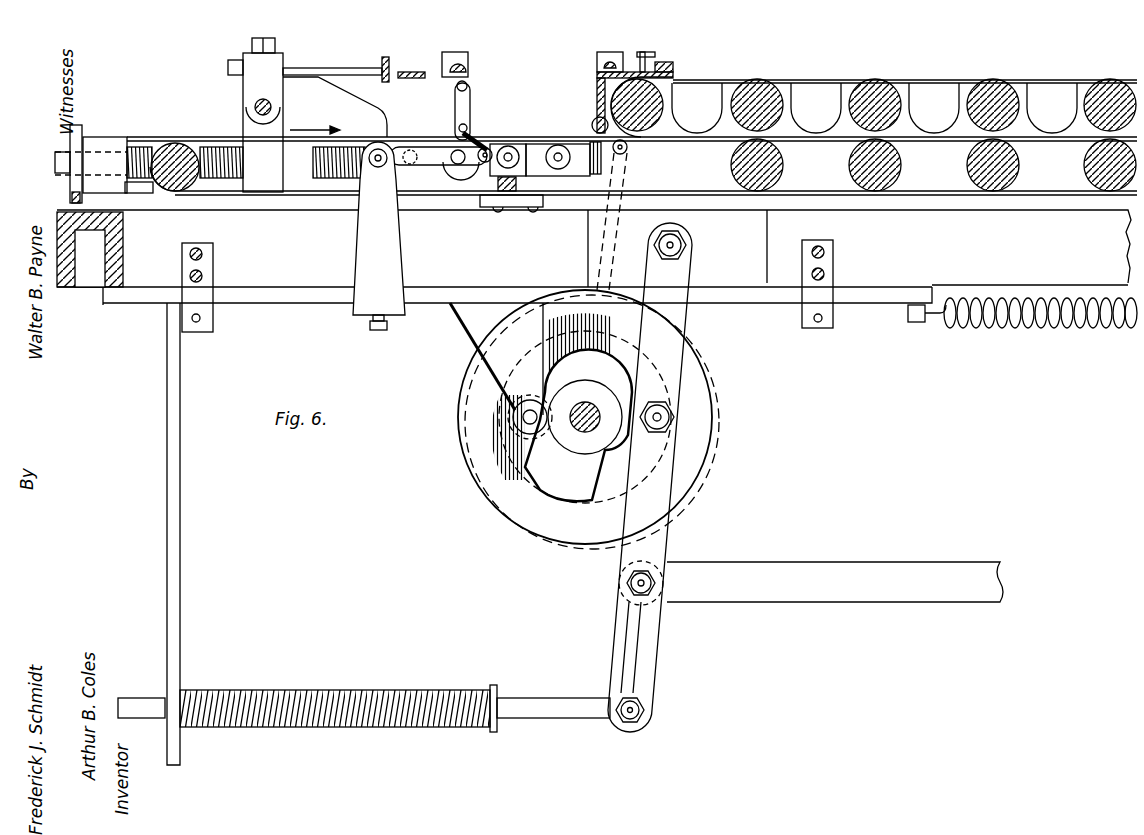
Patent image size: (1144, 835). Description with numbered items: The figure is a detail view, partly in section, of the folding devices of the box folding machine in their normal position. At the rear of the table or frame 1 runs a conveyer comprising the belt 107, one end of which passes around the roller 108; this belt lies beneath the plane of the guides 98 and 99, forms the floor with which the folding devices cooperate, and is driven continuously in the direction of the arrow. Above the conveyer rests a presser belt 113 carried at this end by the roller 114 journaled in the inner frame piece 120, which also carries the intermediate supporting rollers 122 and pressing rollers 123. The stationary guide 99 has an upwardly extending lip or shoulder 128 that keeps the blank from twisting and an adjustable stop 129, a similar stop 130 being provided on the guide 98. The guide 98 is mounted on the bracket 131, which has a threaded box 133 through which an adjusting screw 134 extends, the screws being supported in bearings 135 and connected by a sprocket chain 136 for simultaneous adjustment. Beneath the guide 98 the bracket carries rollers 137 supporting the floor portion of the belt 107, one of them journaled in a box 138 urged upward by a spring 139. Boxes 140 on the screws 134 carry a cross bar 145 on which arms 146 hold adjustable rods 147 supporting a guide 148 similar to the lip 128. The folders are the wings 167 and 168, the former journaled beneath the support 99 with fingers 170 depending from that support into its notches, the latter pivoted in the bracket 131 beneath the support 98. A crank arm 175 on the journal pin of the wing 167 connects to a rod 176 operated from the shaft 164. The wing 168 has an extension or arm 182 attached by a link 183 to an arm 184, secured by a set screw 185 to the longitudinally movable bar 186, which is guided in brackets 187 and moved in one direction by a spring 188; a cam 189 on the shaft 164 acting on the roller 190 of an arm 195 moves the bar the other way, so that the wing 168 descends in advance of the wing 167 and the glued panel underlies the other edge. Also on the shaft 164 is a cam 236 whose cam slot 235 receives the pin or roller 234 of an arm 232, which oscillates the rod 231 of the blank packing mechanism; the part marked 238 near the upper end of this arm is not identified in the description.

The table or frame 1 is at (594, 487).
The guide 98 is at (412, 70).
The guide 99 is at (600, 76).
The belt 107 is at (212, 137).
The roller 108 is at (176, 148).
The presser belt 113 is at (825, 80).
The roller 114 is at (660, 95).
The inner frame piece 120 is at (905, 95).
The intermediate supporting rollers 122 is at (785, 160).
The pressing rollers 123 is at (768, 92).
The lip or shoulder 128 is at (662, 57).
The stop 129 is at (603, 57).
The stop 130 is at (462, 57).
The bracket 131 is at (360, 107).
The threaded box 133 is at (449, 176).
The adjusting screws 134 is at (140, 147).
The bearings 135 is at (92, 137).
The sprocket chain 136 is at (82, 197).
The rollers 137 is at (555, 170).
The boxes 138 is at (525, 150).
The springs 139 is at (510, 192).
The boxes 140 is at (257, 122).
The cross bar 145 is at (272, 107).
The arms 146 is at (262, 68).
The rods 147 is at (318, 65).
The guide 148 is at (392, 58).
The shaft 164 is at (586, 430).
The wing or folder 167 is at (600, 125).
The wing or folder 168 is at (470, 110).
The fingers 170 is at (598, 80).
The crank arm 175 is at (628, 152).
The rod 176 is at (613, 240).
The extension or arm 182 is at (472, 140).
The link 183 is at (437, 150).
The arm 184 is at (379, 228).
The set screw 185 is at (379, 333).
The longitudinally movable bar 186 is at (478, 290).
The brackets 187 is at (215, 268).
The spring 188 is at (1030, 330).
The cam 189 is at (556, 500).
The roller 190 is at (513, 430).
The arm 195 is at (496, 359).
The rod 231 is at (811, 583).
The arm 232 is at (676, 558).
The pin or roller 234 is at (672, 417).
The cam slot 235 is at (620, 482).
The cam 236 is at (540, 512).
The bolt 238 is at (700, 256).